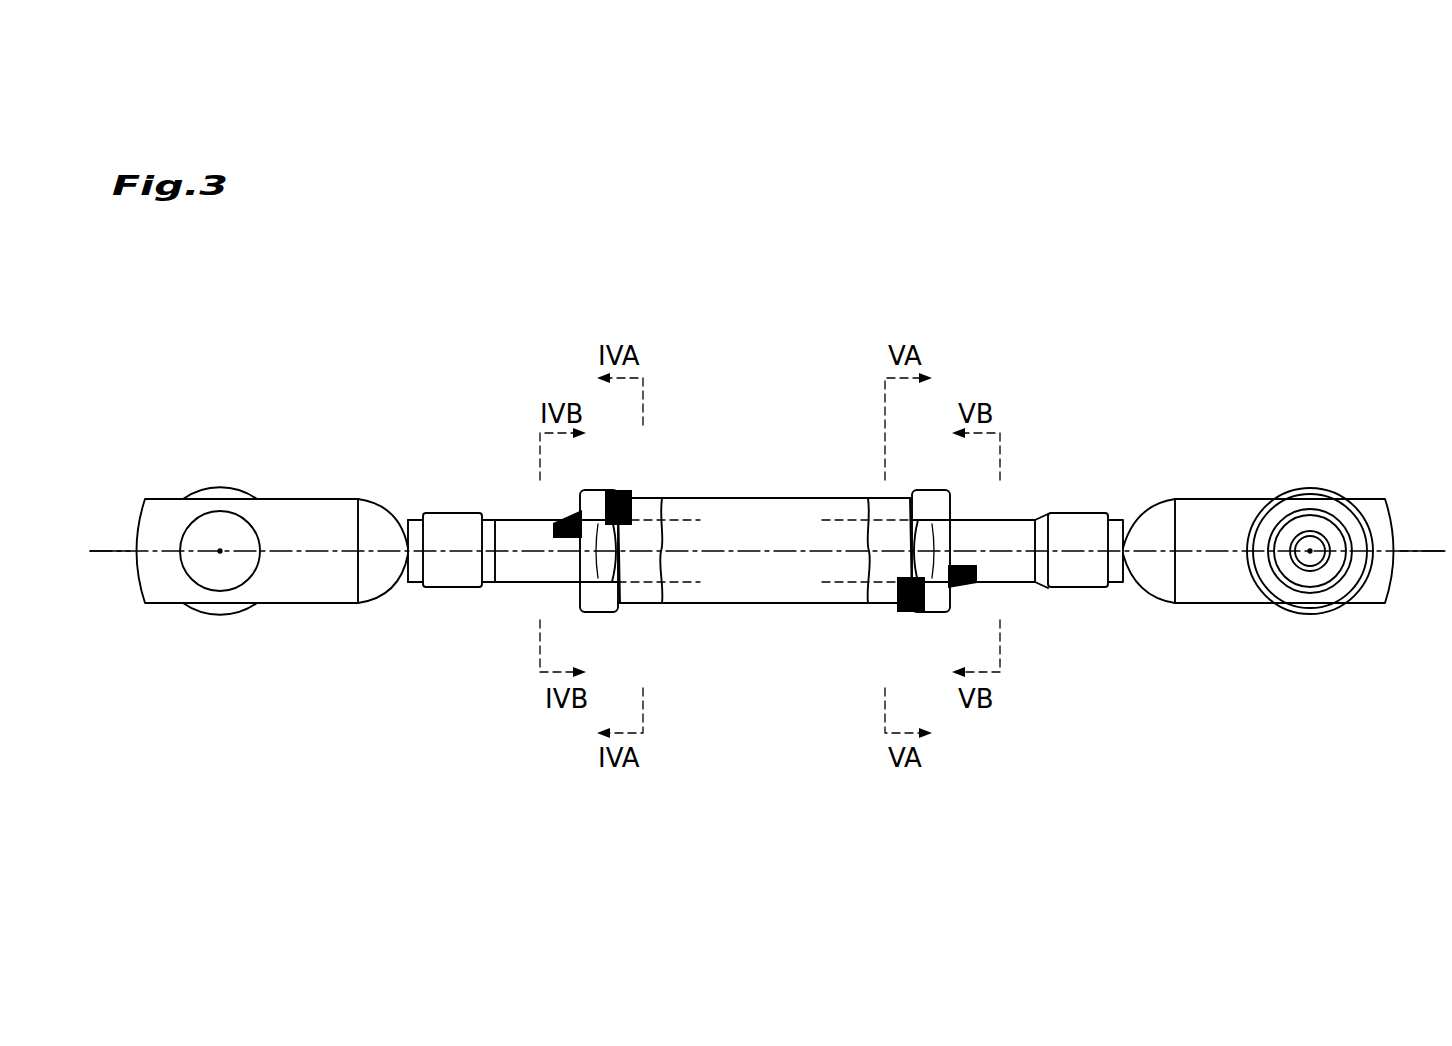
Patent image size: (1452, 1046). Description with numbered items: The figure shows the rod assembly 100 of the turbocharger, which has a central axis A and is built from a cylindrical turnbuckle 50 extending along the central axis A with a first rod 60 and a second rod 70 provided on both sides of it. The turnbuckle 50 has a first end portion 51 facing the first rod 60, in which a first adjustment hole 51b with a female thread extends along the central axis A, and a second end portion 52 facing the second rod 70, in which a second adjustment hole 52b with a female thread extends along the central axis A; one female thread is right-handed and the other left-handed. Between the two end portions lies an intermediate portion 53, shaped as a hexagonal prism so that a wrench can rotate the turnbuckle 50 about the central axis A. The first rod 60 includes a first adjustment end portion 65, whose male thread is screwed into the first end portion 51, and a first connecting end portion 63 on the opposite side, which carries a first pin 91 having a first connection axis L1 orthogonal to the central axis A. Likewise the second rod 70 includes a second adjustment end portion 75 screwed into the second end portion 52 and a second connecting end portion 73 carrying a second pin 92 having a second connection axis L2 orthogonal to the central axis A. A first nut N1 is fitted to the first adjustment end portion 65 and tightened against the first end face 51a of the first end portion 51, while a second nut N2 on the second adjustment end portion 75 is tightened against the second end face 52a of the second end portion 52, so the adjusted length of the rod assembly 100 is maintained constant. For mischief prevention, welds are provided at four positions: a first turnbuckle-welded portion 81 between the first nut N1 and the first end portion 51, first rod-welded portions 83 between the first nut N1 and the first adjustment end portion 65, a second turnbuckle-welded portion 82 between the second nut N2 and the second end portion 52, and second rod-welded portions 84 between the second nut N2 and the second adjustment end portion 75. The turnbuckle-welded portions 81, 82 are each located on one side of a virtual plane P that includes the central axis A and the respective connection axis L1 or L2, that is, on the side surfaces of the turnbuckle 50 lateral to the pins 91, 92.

The rod assembly 100 is at (1158, 312).
The first rod 60 is at (400, 477).
The first connecting end portion 63 is at (175, 590).
The first pin 91 is at (215, 612).
The first connection axis L1 is at (220, 549).
The central axis A is at (107, 548).
The first adjustment end portion 65 is at (568, 565).
The turnbuckle 50 is at (753, 475).
The first end portion 51 is at (643, 600).
The first end face 51a is at (598, 566).
The first adjustment hole 51b is at (690, 572).
The intermediate portion 53 is at (766, 603).
The second end portion 52 is at (890, 510).
The second end face 52a is at (917, 538).
The second adjustment hole 52b is at (828, 528).
The first nut N1 is at (597, 490).
The first turnbuckle-welded portion 81 is at (622, 493).
The first rod-welded portion 83 is at (553, 510).
The second nut N2 is at (935, 605).
The second turnbuckle-welded portion 82 is at (898, 612).
The second rod-welded portion 84 is at (963, 590).
The second rod 70 is at (1130, 475).
The second adjustment end portion 75 is at (963, 530).
The second connecting end portion 73 is at (1372, 498).
The second pin 92 is at (1320, 612).
The second connection axis L2 is at (1310, 549).
The virtual plane P is at (1413, 555).